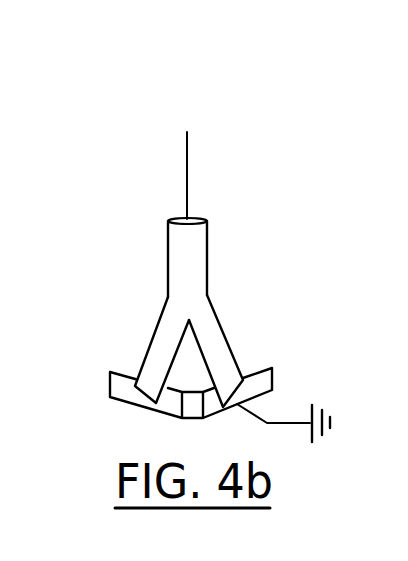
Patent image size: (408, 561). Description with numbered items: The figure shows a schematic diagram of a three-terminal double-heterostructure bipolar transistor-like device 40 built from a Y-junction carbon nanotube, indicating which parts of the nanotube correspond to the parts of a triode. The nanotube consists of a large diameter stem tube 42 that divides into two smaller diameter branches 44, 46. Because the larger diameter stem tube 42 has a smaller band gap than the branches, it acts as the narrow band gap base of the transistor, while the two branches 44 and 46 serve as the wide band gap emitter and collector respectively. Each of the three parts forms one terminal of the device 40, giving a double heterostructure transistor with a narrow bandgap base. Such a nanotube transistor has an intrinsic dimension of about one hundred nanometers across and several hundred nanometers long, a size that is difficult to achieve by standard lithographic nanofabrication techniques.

The three-terminal double-heterostructure bipolar transistor-like device 40 is at (253, 127).
The large diameter stem tube 42 is at (210, 268).
The branch 44 is at (153, 330).
The branch 46 is at (220, 323).